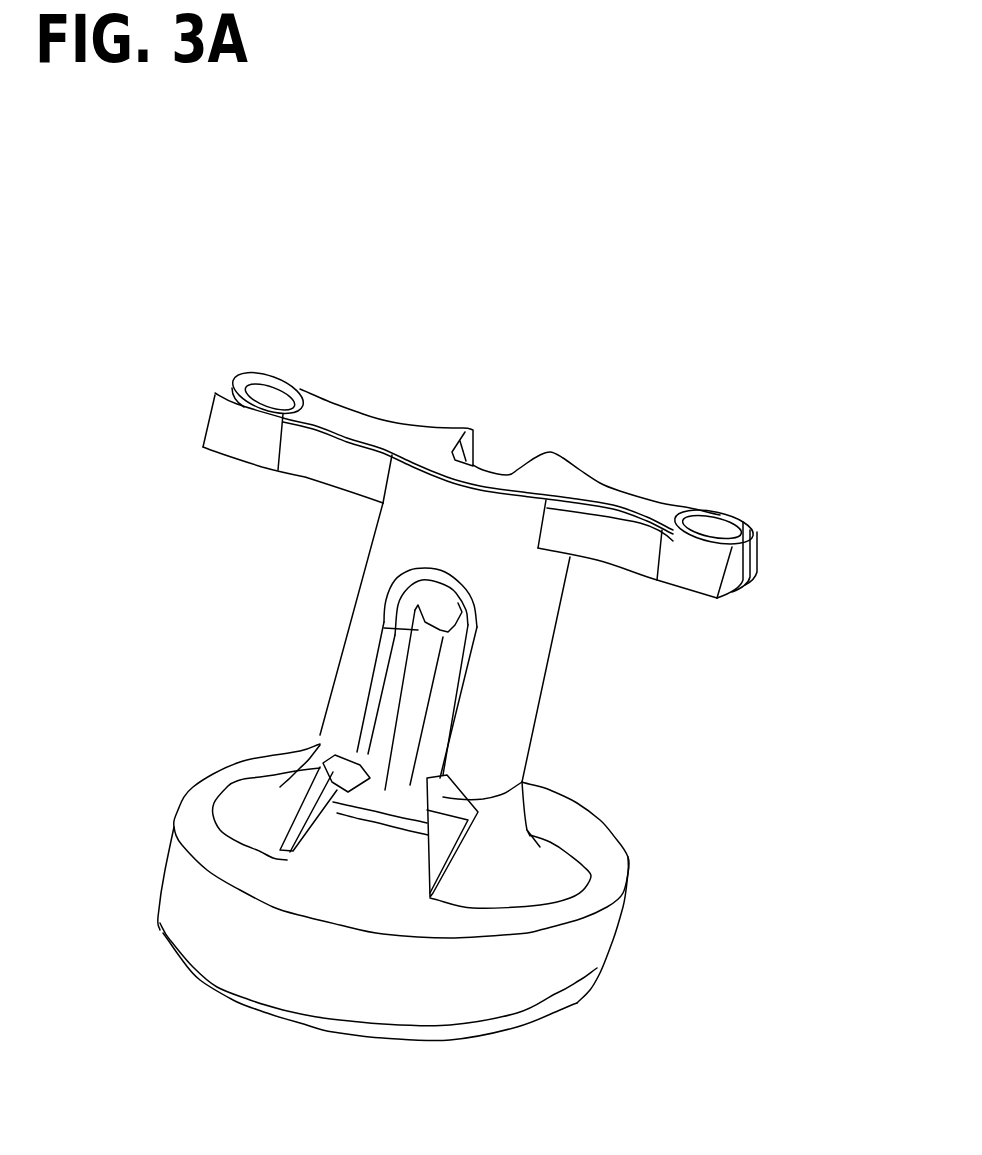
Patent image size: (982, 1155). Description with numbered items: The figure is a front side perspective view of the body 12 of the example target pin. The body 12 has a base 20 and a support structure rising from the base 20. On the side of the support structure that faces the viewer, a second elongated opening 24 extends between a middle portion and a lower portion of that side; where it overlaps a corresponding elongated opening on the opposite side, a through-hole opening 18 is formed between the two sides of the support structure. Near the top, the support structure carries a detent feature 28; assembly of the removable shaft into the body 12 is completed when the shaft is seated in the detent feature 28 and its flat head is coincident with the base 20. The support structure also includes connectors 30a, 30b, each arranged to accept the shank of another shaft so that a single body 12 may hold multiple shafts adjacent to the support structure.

The body 12 is at (755, 312).
The through-hole opening 18 is at (460, 624).
The base 20 is at (511, 1024).
The second elongated opening 24 is at (400, 724).
The detent feature 28 is at (476, 446).
The connector 30a is at (274, 386).
The connector 30b is at (727, 513).